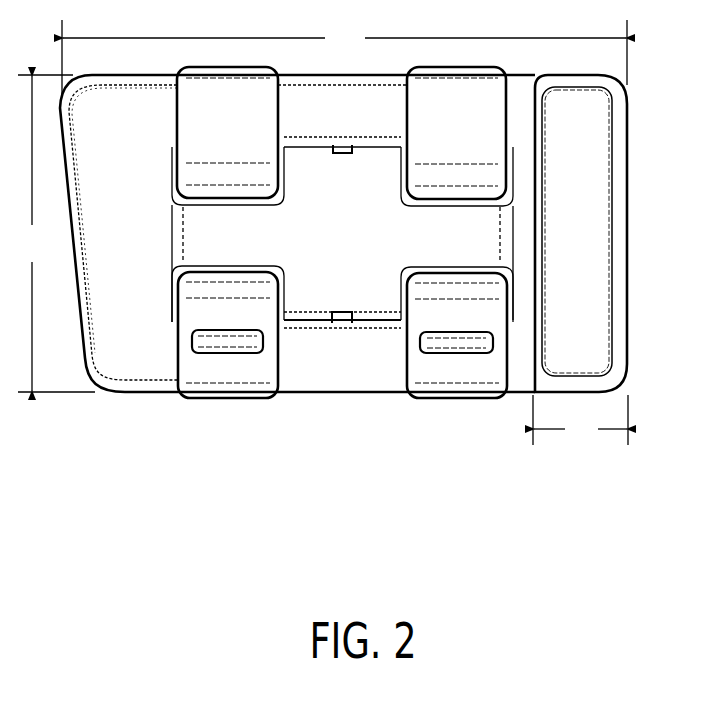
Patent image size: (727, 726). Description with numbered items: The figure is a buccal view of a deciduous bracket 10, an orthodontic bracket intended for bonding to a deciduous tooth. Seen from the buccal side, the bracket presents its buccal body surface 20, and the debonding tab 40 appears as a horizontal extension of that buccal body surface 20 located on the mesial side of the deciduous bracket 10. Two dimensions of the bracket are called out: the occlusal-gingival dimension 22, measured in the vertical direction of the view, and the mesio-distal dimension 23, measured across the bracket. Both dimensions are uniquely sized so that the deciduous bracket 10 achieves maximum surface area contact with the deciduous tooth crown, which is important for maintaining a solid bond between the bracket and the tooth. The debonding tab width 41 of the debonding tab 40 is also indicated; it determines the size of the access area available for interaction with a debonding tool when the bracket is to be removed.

The deciduous bracket 10 is at (354, 292).
The buccal body surface 20 is at (140, 395).
The occlusal-gingival dimension 22 is at (56, 233).
The mesio-distal dimension 23 is at (344, 58).
The debonding tab 40 is at (620, 232).
The debonding tab width 41 is at (580, 420).